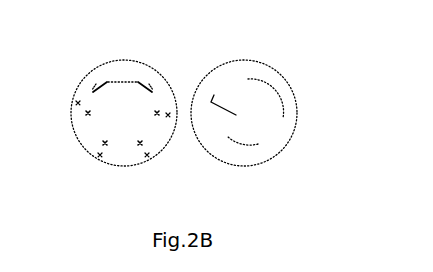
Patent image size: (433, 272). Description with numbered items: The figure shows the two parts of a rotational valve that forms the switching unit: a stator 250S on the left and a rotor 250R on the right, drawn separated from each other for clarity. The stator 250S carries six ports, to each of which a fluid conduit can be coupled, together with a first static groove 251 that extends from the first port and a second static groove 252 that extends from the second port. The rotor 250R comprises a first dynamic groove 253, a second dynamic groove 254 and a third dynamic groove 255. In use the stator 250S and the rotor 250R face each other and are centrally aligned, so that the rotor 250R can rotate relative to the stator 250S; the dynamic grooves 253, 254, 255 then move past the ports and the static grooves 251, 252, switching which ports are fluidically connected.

The stator 250S is at (125, 72).
The rotor 250R is at (233, 70).
The first static groove 251 is at (150, 81).
The second static groove 252 is at (92, 82).
The first dynamic groove 253 is at (273, 86).
The second dynamic groove 254 is at (242, 115).
The third dynamic groove 255 is at (245, 144).